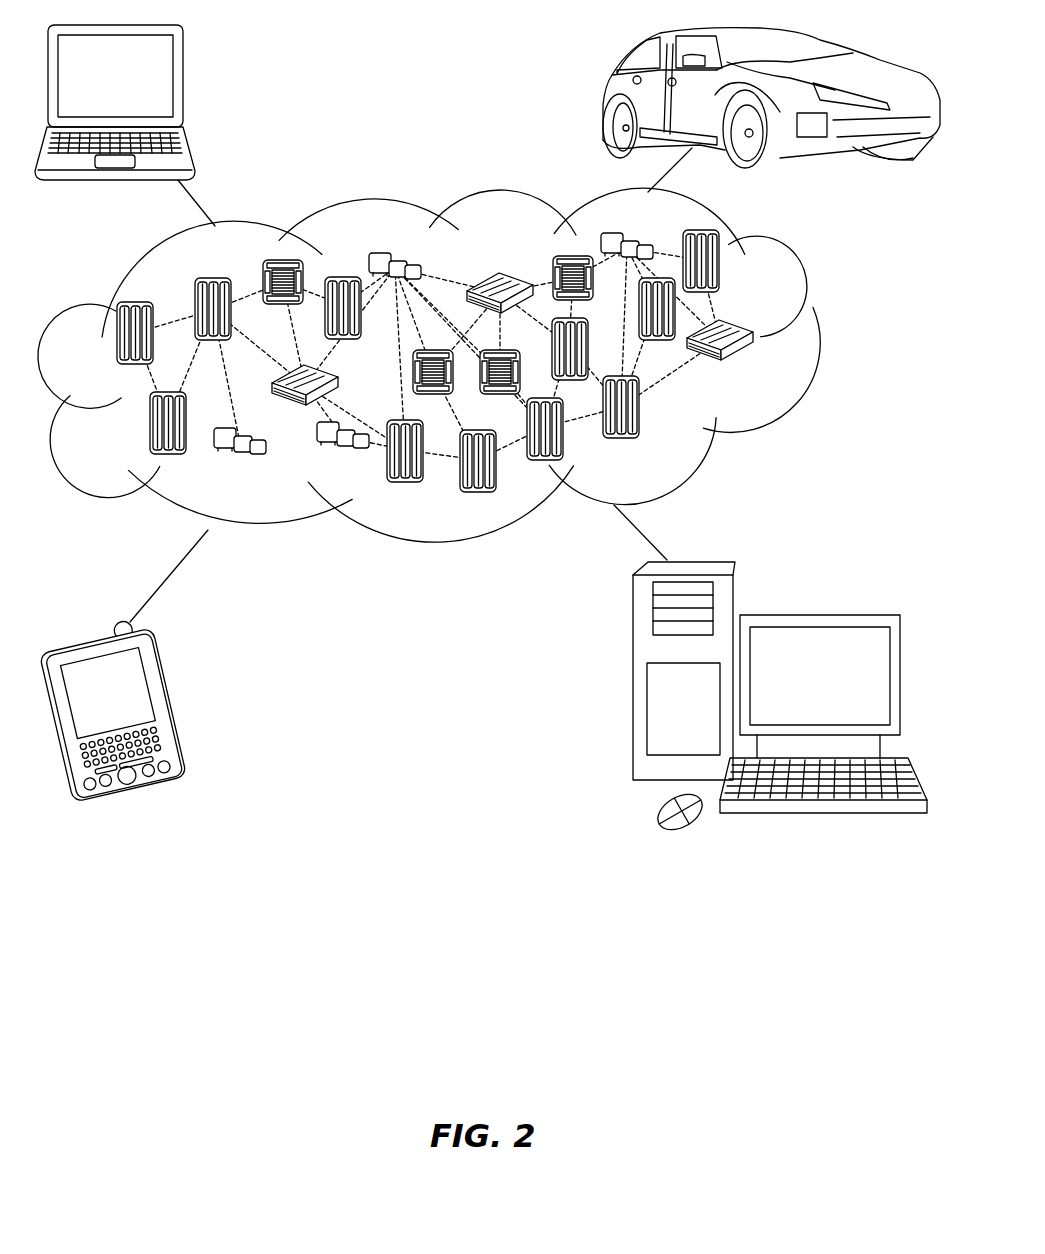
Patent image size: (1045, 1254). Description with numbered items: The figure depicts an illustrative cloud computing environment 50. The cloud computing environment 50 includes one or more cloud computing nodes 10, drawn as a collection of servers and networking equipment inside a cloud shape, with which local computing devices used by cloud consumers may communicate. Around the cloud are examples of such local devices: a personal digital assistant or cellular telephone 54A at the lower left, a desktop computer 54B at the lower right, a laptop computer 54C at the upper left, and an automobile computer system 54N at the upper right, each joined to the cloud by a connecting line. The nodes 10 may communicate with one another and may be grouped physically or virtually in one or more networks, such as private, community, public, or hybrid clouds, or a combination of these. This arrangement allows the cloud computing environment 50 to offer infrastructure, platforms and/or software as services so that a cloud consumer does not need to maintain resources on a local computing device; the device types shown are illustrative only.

The cloud computing nodes 10 is at (766, 372).
The cloud computing environment 50 is at (816, 344).
The personal digital assistant (PDA) or cellular telephone 54A is at (167, 708).
The desktop computer 54B is at (818, 613).
The laptop computer 54C is at (182, 84).
The automobile computer system 54N is at (610, 103).